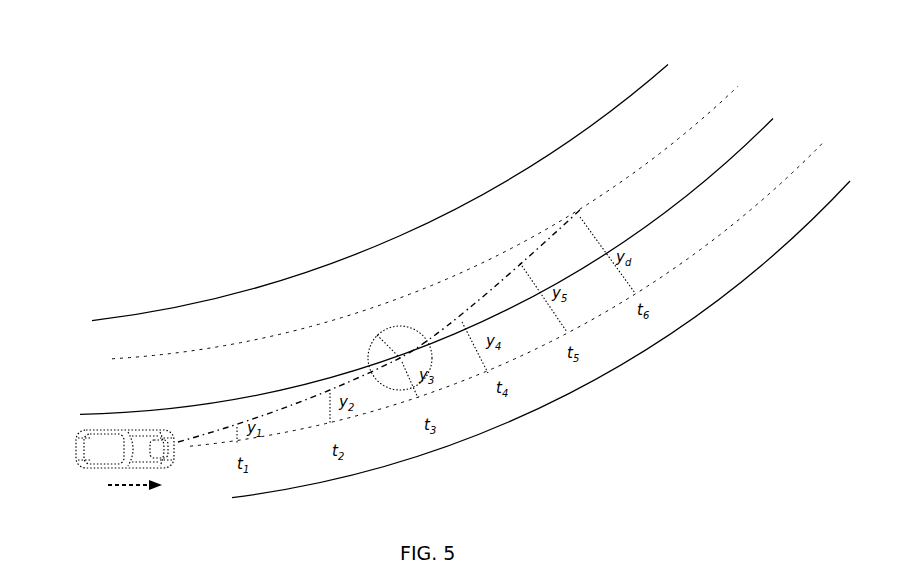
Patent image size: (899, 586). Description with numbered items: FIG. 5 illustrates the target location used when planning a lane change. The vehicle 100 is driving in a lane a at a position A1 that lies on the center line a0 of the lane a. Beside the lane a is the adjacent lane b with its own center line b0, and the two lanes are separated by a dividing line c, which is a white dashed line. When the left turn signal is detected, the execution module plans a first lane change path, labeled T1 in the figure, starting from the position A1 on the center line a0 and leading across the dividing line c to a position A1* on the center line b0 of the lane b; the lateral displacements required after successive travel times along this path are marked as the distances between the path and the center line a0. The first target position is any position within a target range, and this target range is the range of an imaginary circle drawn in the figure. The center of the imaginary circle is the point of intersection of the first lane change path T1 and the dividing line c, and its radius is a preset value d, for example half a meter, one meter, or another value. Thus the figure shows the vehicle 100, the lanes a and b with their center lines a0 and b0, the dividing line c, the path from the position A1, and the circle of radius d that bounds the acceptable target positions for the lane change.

The vehicle 100 is at (75, 435).
The position A1 is at (125, 449).
The predicted trajectory T1 is at (497, 287).
The lane b is at (653, 117).
The center line of lane b b0 is at (708, 115).
The dividing line c is at (748, 147).
The center line of lane a a0 is at (738, 220).
The lane a is at (703, 277).
The preset value d is at (400, 358).